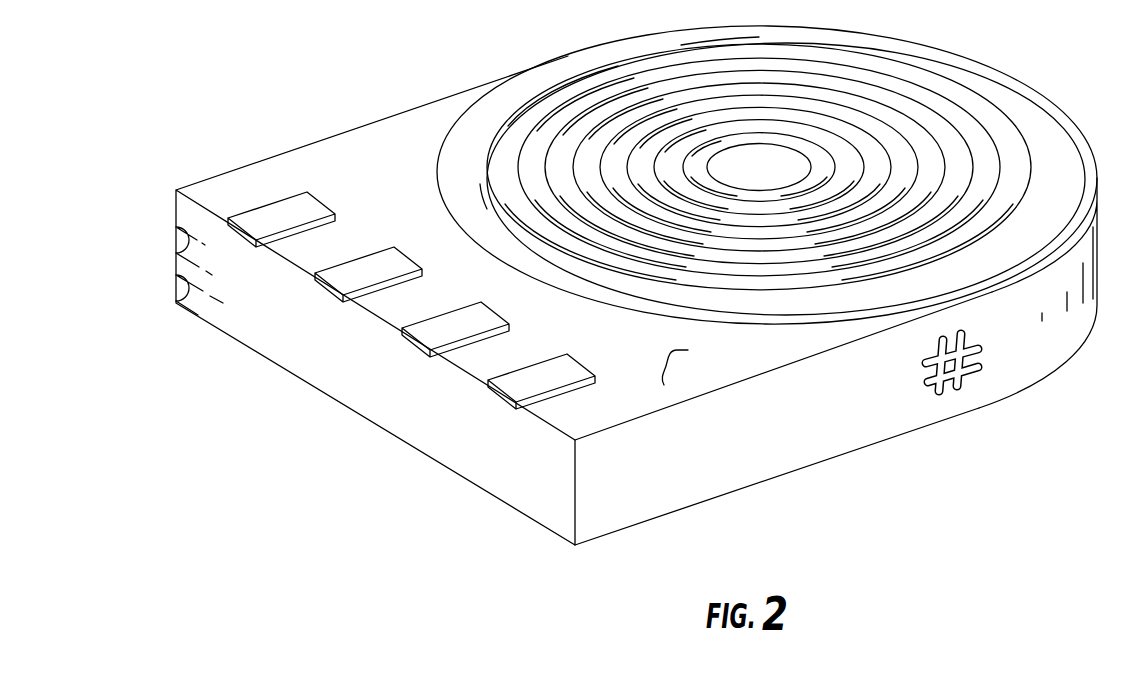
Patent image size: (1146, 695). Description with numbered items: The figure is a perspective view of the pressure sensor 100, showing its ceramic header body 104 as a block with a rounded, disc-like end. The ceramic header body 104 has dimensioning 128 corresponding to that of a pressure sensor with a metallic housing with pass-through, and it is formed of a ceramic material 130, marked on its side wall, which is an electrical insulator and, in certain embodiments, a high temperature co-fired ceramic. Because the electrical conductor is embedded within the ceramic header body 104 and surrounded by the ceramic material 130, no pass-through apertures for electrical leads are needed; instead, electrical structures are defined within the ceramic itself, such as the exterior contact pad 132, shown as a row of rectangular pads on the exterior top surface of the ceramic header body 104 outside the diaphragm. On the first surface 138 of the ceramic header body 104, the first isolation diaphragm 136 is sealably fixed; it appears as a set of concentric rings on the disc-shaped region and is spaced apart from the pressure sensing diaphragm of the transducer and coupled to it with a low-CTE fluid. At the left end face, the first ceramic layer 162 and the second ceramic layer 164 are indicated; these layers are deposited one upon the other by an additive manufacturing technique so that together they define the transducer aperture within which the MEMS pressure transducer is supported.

The pressure sensor 100 is at (423, 525).
The ceramic header body 104 is at (1023, 428).
The dimensioning 128 is at (823, 422).
The ceramic material 130 is at (976, 378).
The exterior contact pad 132 is at (340, 276).
The first isolation diaphragm 136 is at (978, 147).
The first surface 138 is at (668, 377).
The first ceramic layer 162 is at (176, 297).
The second ceramic layer 164 is at (176, 232).